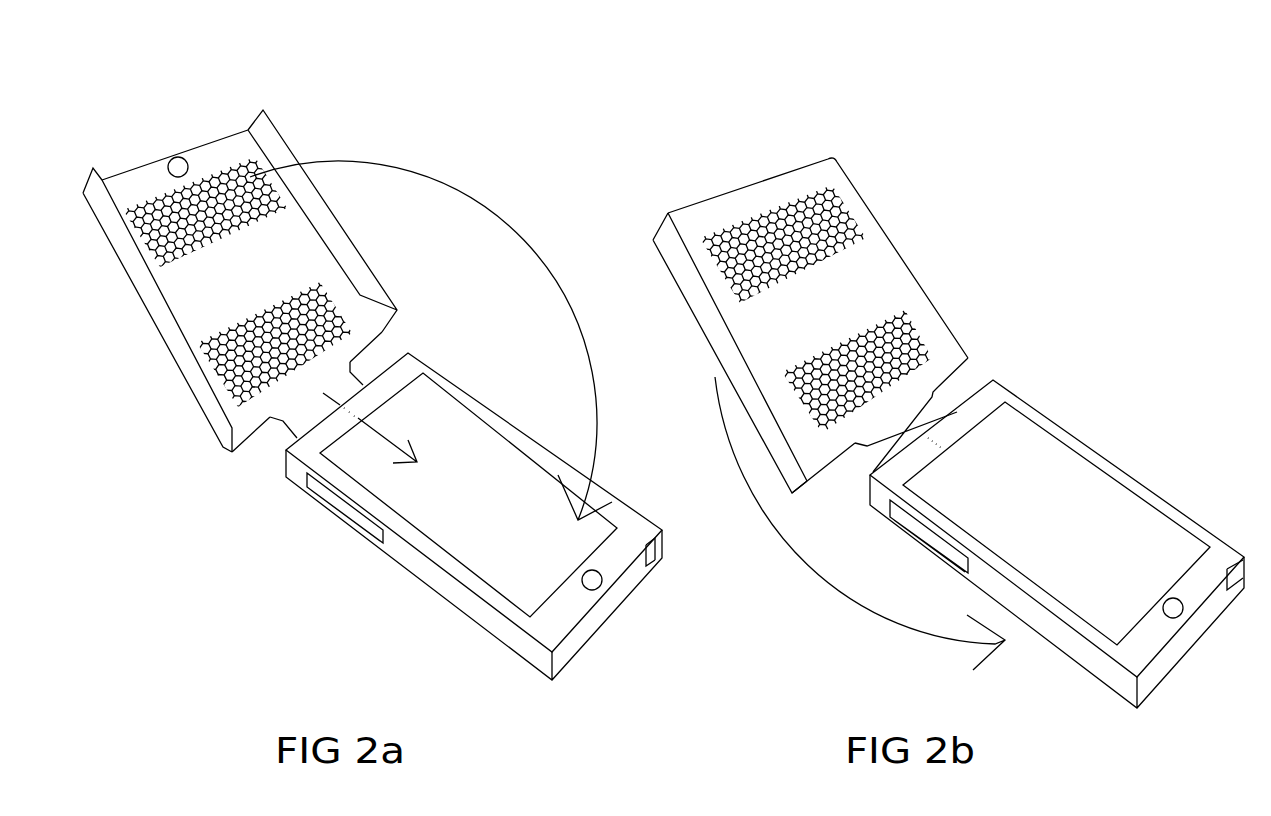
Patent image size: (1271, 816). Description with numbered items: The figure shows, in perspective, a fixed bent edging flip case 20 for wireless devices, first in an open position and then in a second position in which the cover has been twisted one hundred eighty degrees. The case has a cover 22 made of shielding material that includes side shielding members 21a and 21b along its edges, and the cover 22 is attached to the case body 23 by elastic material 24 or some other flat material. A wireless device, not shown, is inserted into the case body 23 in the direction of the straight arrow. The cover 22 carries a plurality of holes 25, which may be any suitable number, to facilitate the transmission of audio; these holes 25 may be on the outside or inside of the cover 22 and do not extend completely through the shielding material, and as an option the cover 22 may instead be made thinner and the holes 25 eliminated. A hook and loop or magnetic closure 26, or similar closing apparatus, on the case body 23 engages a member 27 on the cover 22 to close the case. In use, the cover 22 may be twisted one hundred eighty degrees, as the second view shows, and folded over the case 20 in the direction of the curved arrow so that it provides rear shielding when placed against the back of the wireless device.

In FIG. 2A, the fixed bent edging flip case 20 is at (501, 508).
In FIG. 2B, the fixed bent edging flip case 20 is at (1057, 548).
In FIG. 2A, the side shielding member 21a is at (150, 302).
In FIG. 2B, the side shielding member 21a is at (700, 303).
In FIG. 2A, the side shielding member 21b is at (337, 227).
In FIG. 2A, the cover 22 is at (253, 240).
In FIG. 2B, the cover 22 is at (816, 271).
In FIG. 2A, the case body 23 is at (487, 405).
In FIG. 2B, the case body 23 is at (1145, 485).
In FIG. 2A, the elastic material 24 is at (364, 383).
In FIG. 2B, the elastic material 24 is at (873, 472).
In FIG. 2A, the holes 25 is at (202, 205).
In FIG. 2B, the holes 25 is at (830, 203).
In FIG. 2A, the hook and loop or magnetic closure 26 is at (603, 582).
In FIG. 2B, the hook and loop or magnetic closure 26 is at (1178, 617).
In FIG. 2A, the member 27 is at (180, 160).